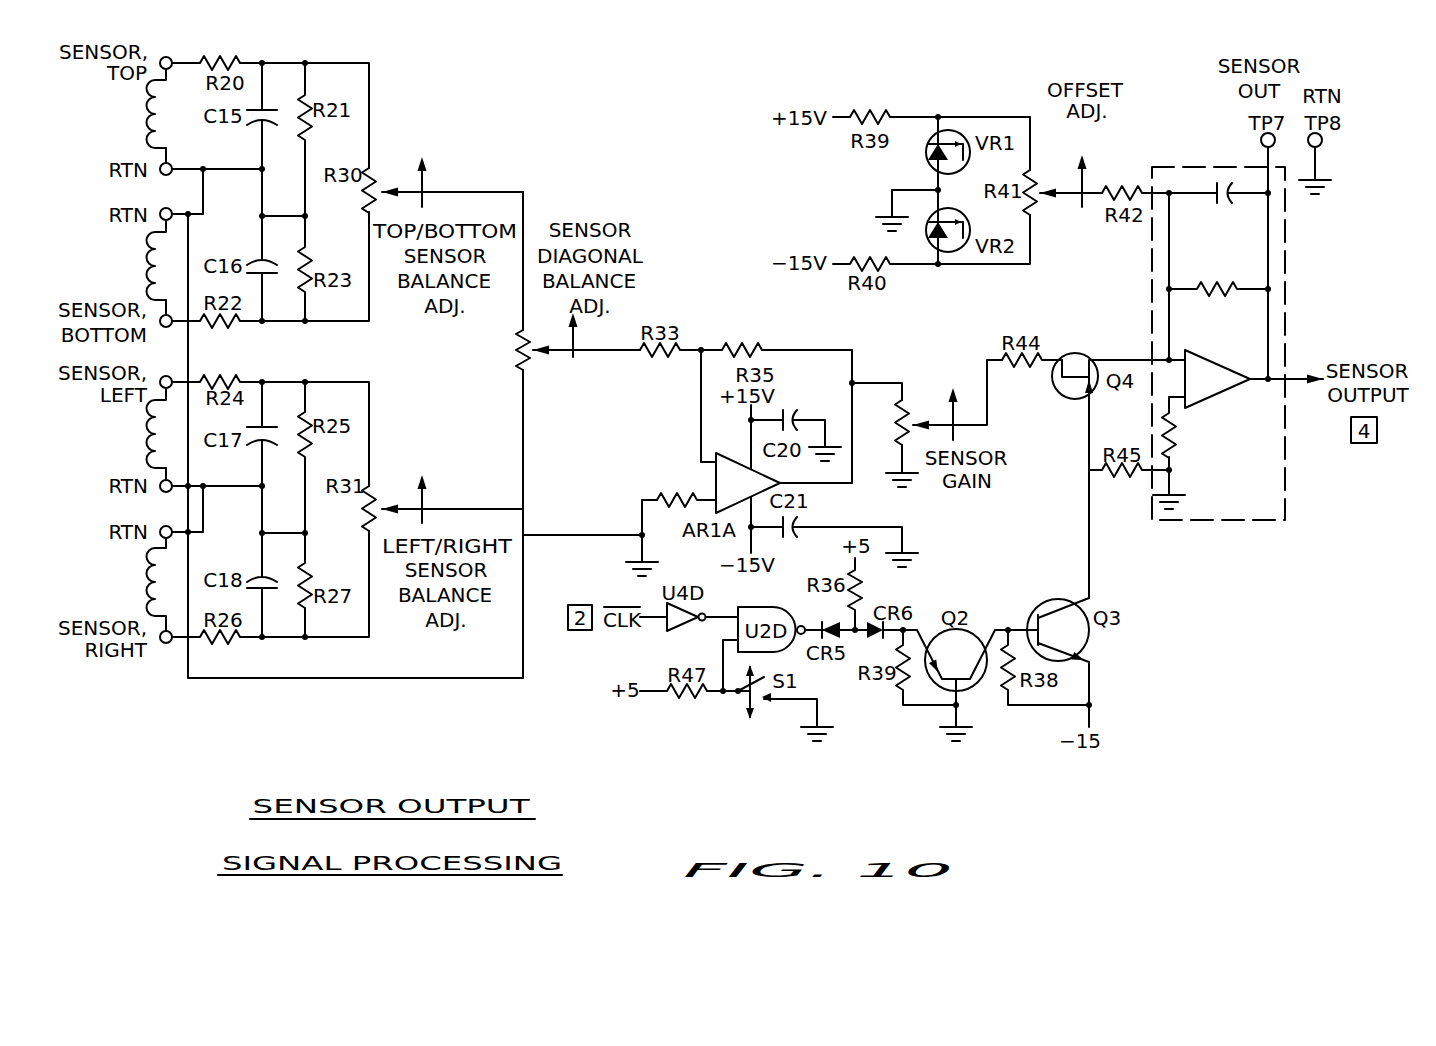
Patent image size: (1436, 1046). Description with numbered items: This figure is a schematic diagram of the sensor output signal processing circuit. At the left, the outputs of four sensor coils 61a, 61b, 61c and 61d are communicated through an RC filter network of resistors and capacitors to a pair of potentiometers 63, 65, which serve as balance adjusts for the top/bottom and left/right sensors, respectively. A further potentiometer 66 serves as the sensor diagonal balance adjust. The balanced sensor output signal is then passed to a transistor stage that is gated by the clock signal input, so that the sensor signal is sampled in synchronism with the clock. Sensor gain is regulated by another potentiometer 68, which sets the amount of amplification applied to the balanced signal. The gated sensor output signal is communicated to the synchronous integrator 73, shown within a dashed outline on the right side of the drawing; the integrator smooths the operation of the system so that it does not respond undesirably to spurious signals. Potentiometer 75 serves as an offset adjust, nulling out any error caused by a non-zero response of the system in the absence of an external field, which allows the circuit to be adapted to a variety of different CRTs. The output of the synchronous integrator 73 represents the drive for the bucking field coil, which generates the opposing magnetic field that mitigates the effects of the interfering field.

The sensor coil 61a is at (123, 116).
The sensor coil 61b is at (123, 267).
The sensor coil 61c is at (125, 434).
The sensor coil 61d is at (124, 584).
The potentiometer 63 is at (438, 178).
The potentiometer 65 is at (440, 498).
The potentiometer 66 is at (547, 376).
The potentiometer 68 is at (934, 421).
The synchronous integrator 73 is at (1268, 522).
The potentiometer 75 is at (1098, 178).